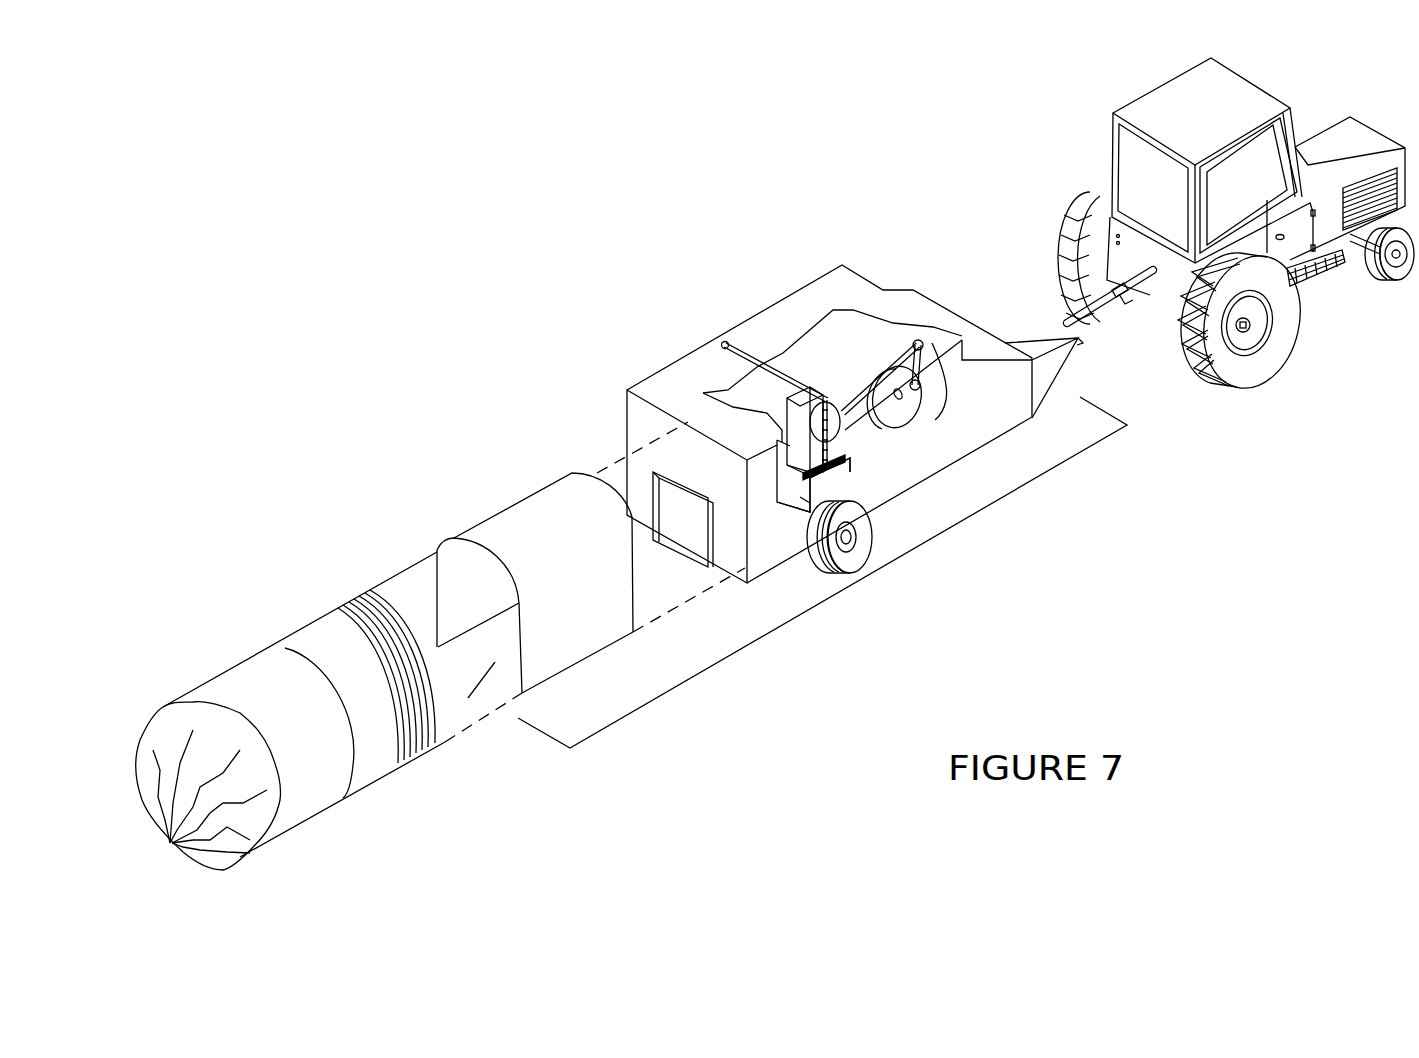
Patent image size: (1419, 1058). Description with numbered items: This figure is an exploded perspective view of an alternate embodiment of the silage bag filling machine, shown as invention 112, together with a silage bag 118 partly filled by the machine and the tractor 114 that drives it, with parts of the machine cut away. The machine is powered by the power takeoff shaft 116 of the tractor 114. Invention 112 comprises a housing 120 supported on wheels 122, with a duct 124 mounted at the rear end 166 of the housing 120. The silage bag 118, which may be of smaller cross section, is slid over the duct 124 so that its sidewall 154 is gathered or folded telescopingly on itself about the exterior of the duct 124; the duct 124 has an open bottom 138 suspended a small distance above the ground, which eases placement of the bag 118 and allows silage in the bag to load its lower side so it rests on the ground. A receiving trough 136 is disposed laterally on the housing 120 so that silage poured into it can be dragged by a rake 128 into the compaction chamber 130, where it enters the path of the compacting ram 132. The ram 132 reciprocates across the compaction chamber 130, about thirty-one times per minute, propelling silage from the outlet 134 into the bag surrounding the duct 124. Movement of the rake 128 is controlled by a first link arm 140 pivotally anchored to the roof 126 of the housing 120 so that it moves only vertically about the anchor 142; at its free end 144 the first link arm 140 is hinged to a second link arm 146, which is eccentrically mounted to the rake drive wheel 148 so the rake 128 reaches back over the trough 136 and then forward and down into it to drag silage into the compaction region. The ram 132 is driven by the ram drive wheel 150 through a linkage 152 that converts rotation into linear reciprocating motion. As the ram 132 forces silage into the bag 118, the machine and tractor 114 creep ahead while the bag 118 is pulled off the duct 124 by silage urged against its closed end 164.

The alternate embodiment invention 112 is at (848, 588).
The tractor 114 is at (1307, 307).
The power takeoff shaft 116 is at (1107, 303).
The silage bag 118 is at (363, 758).
The housing 120 is at (653, 393).
The wheels 122 is at (828, 562).
The duct 124 is at (517, 523).
The roof 126 is at (830, 288).
The rake 128 is at (843, 460).
The compaction chamber 130 is at (782, 438).
The compacting ram 132 is at (850, 440).
The outlet 134 is at (690, 527).
The receiving trough 136 is at (800, 497).
The open bottom 138 is at (468, 698).
The first link arm 140 is at (775, 370).
The anchor 142 is at (773, 423).
The free end 144 is at (825, 400).
The second link arm 146 is at (862, 420).
The rake drive wheel 148 is at (845, 450).
The ram drive wheel 150 is at (900, 408).
The linkage 152 is at (882, 368).
The sidewall 154 is at (347, 603).
The closed end 164 is at (197, 838).
The rear end 166 is at (738, 562).